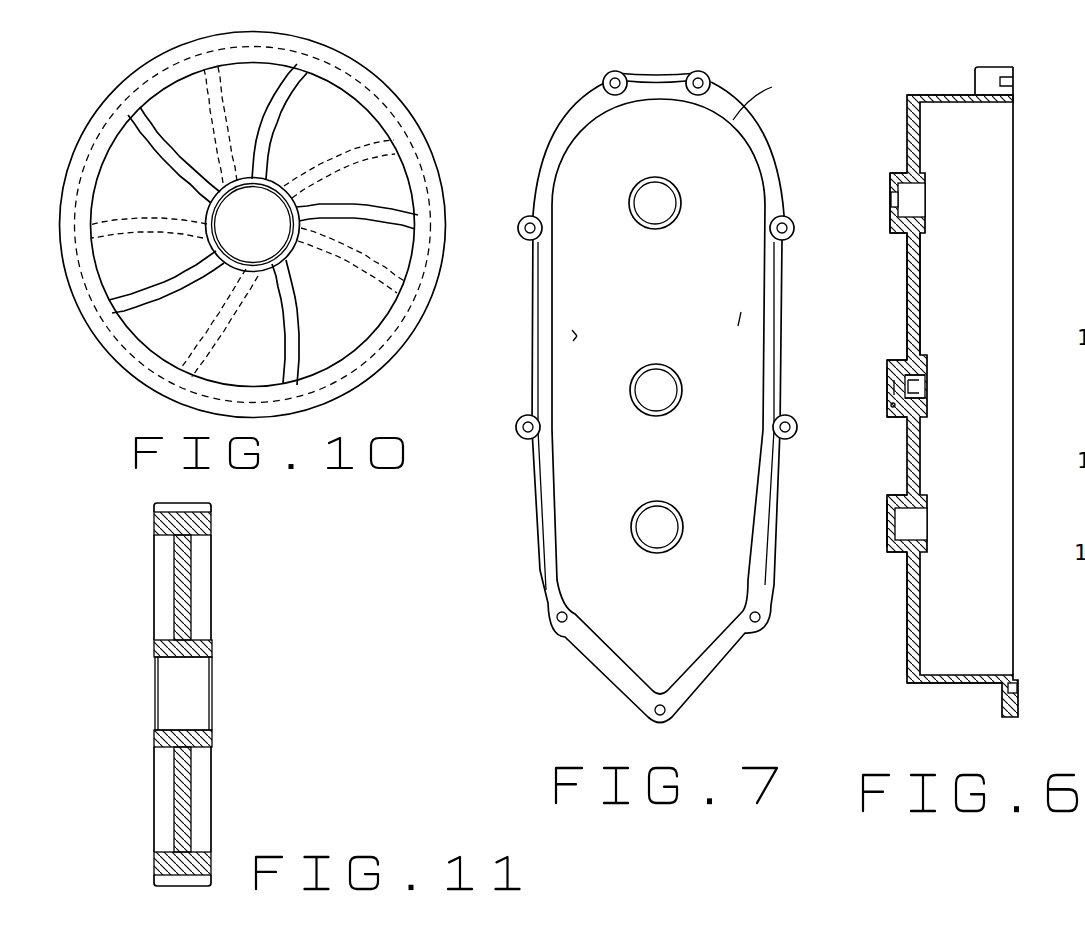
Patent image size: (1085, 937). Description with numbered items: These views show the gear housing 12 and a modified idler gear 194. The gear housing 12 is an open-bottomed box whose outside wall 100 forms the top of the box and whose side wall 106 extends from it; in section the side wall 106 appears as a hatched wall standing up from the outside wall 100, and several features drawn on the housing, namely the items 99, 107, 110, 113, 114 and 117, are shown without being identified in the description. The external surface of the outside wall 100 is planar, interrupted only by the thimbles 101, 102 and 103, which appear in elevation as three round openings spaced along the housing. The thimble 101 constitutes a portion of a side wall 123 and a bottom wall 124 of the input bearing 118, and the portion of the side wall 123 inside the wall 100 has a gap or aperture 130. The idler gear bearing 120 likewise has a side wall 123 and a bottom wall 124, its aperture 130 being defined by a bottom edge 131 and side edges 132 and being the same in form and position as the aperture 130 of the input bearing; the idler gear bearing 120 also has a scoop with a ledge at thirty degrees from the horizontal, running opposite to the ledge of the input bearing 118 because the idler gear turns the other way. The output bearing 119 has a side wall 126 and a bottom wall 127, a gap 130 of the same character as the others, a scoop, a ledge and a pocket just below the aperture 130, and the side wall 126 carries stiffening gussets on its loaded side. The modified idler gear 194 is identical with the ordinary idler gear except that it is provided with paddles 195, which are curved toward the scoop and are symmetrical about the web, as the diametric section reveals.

In FIG. 7, the gear housing 12 is at (649, 386).
In FIG. 6, the gear housing 12 is at (1032, 180).
In FIG. 7, the side wall 99 is at (744, 321).
In FIG. 6, the side wall 99 is at (905, 320).
In FIG. 7, the outside wall 100 is at (577, 336).
In FIG. 6, the outside wall 100 is at (907, 638).
In FIG. 7, the thimble 101 is at (680, 510).
In FIG. 6, the thimble 101 is at (898, 550).
In FIG. 7, the thimble 102 is at (673, 370).
In FIG. 6, the thimble 102 is at (893, 408).
In FIG. 7, the thimble 103 is at (652, 233).
In FIG. 6, the thimble 103 is at (889, 186).
In FIG. 6, the side wall 106 is at (950, 95).
In FIG. 7, the bottom wall 107 is at (745, 105).
In FIG. 6, the bottom wall 107 is at (1002, 685).
In FIG. 6, the lip 110 is at (1013, 83).
In FIG. 7, the bolt hole boss 113 is at (649, 386).
In FIG. 7, the bolt hole 114 is at (697, 72).
In FIG. 6, the inner surface of wall 117 is at (920, 302).
In FIG. 6, the input bearing 118 is at (925, 506).
In FIG. 6, the output bearing 119 is at (921, 188).
In FIG. 6, the idler gear bearing 120 is at (920, 427).
In FIG. 6, the side wall 123 is at (918, 512).
In FIG. 6, the bottom wall 124 is at (890, 377).
In FIG. 6, the side wall 126 is at (917, 185).
In FIG. 6, the bottom wall 127 is at (890, 203).
In FIG. 6, the gap or aperture 130 is at (925, 387).
In FIG. 6, the bottom edge 131 is at (917, 387).
In FIG. 6, the side edges 132 is at (928, 380).
In FIG. 10, the gear 194 is at (378, 73).
In FIG. 11, the gear 194 is at (228, 539).
In FIG. 10, the paddles 195 is at (163, 157).
In FIG. 11, the paddles 195 is at (158, 570).